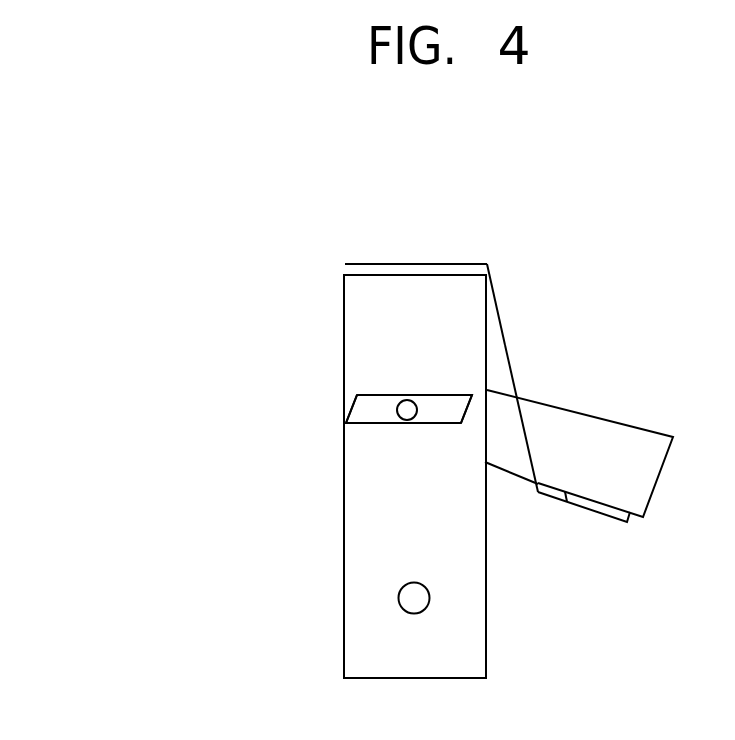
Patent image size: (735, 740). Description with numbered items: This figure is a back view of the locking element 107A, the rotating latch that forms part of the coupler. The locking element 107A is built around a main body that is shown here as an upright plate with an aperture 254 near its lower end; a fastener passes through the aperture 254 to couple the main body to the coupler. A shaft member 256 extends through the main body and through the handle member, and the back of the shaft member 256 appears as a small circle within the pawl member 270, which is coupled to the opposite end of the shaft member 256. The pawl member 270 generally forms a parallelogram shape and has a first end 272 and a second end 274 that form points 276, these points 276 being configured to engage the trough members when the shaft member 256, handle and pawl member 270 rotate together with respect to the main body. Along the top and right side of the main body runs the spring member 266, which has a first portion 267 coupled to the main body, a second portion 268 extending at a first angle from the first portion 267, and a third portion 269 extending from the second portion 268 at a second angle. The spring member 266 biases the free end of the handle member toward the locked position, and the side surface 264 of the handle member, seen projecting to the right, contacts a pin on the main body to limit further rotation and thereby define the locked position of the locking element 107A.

The locking element 107A is at (480, 212).
The aperture 254 is at (418, 603).
The shaft member 256 is at (407, 420).
The side surface 264 is at (602, 418).
The spring member 266 is at (507, 340).
The first portion 267 is at (408, 264).
The second portion 268 is at (495, 292).
The third portion 269 is at (602, 510).
The pawl member 270 is at (382, 415).
The first end 272 is at (352, 408).
The second end 274 is at (467, 415).
The points 276 is at (346, 423).